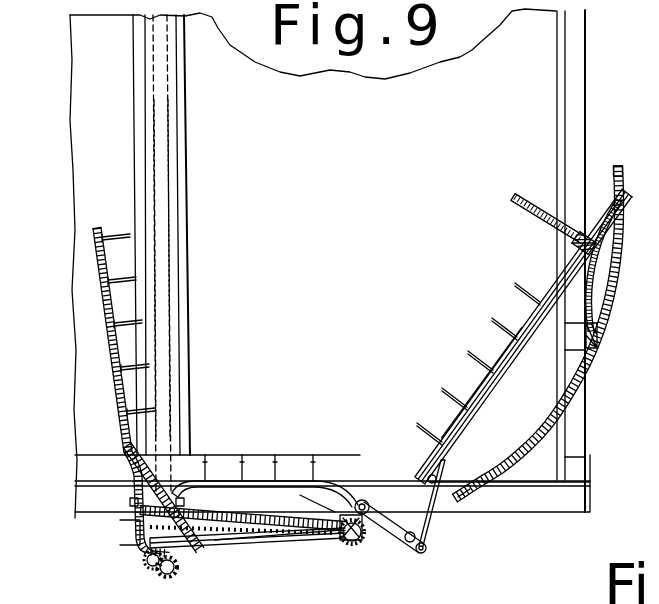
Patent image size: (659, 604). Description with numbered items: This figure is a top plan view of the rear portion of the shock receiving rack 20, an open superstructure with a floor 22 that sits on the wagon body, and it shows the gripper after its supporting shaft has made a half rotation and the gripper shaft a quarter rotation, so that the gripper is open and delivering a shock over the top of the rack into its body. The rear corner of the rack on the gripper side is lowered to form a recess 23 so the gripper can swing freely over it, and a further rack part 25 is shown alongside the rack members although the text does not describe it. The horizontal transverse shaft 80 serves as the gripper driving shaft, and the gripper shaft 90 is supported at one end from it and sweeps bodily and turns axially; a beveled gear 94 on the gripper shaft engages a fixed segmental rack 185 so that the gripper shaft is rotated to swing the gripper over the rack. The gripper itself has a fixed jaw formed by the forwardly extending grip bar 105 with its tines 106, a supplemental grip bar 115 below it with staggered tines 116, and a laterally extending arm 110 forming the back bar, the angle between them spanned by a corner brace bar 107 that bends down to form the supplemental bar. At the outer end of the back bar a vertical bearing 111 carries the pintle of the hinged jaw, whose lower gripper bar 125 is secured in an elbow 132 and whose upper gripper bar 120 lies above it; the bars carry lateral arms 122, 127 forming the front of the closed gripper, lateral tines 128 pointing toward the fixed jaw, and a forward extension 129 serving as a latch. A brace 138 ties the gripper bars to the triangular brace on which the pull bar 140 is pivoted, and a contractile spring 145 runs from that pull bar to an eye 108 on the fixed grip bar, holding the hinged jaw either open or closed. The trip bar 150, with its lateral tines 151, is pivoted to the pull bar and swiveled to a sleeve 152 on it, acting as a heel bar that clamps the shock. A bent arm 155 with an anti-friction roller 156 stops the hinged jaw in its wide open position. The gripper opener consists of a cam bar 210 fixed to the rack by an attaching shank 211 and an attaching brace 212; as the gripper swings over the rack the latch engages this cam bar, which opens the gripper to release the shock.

The rack 20 is at (558, 55).
The floor 22 is at (88, 153).
The recess 23 is at (450, 487).
The sash 25 is at (176, 318).
The transverse shaft 80 is at (160, 385).
The gripper shaft 90 is at (150, 562).
The beveled gear 94 is at (178, 566).
The grip bar 105 is at (107, 237).
The tines 106 is at (100, 290).
The corner brace bar 107 is at (165, 472).
The eye 108 is at (135, 505).
The arm 110 is at (250, 532).
The vertical bearing 111 is at (346, 541).
The supplemental grip bar 115 is at (118, 388).
The tines 116 is at (110, 345).
The gripper bar 120 is at (568, 264).
The lateral arm 122 is at (575, 243).
The gripper bar 125 is at (488, 393).
The lateral arm 127 is at (535, 216).
The lateral tines 128 is at (455, 400).
The forward extension 129 is at (628, 228).
The elbow 132 is at (330, 512).
The brace 138 is at (435, 480).
The pull bar 140 is at (443, 466).
The contractile spring 145 is at (283, 540).
The trip bar 150 is at (332, 483).
The lateral tines 151 is at (243, 468).
The sleeve 152 is at (366, 500).
The bent arm 155 is at (360, 545).
The anti-friction roller 156 is at (387, 550).
The segmental rack 185 is at (226, 548).
The cam bar 210 is at (608, 290).
The attaching shank 211 is at (467, 504).
The attaching brace 212 is at (606, 256).